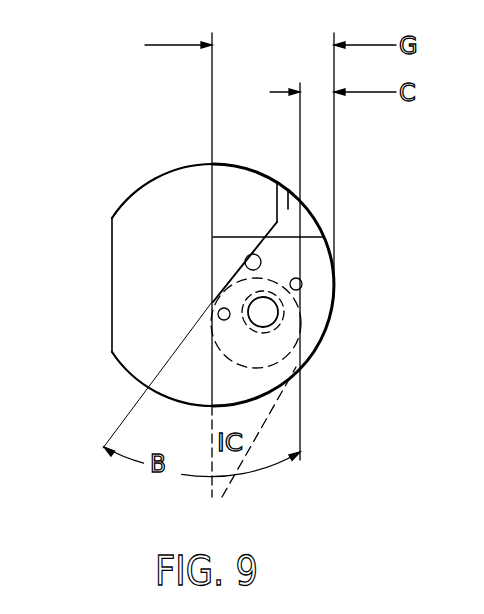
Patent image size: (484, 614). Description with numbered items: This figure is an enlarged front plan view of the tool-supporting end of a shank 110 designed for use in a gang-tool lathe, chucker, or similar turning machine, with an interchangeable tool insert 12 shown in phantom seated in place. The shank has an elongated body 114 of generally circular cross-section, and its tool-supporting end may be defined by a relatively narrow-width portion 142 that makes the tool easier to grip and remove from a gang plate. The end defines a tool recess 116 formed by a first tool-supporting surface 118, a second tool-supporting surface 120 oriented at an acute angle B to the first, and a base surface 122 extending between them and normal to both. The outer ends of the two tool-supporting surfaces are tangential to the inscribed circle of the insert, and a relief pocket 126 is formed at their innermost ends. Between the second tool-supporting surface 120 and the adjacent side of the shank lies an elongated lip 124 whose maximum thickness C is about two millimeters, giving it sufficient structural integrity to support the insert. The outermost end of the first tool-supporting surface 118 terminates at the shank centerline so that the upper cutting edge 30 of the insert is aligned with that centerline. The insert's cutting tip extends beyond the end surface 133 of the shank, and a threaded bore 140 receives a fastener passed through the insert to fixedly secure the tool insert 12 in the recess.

The tool insert 12 is at (268, 432).
The upper cutting edge 30 is at (214, 495).
The shank 110 is at (178, 168).
The body 114 is at (112, 237).
The tool recess 116 is at (243, 341).
The first tool-supporting surface 118 is at (245, 263).
The second tool-supporting surface 120 is at (302, 283).
The base surface 122 is at (211, 304).
The elongated lip 124 is at (313, 253).
The relief pocket 126 is at (287, 188).
The end surface 133 is at (281, 390).
The threaded bore 140 is at (279, 321).
The narrow-width portion 142 is at (211, 202).